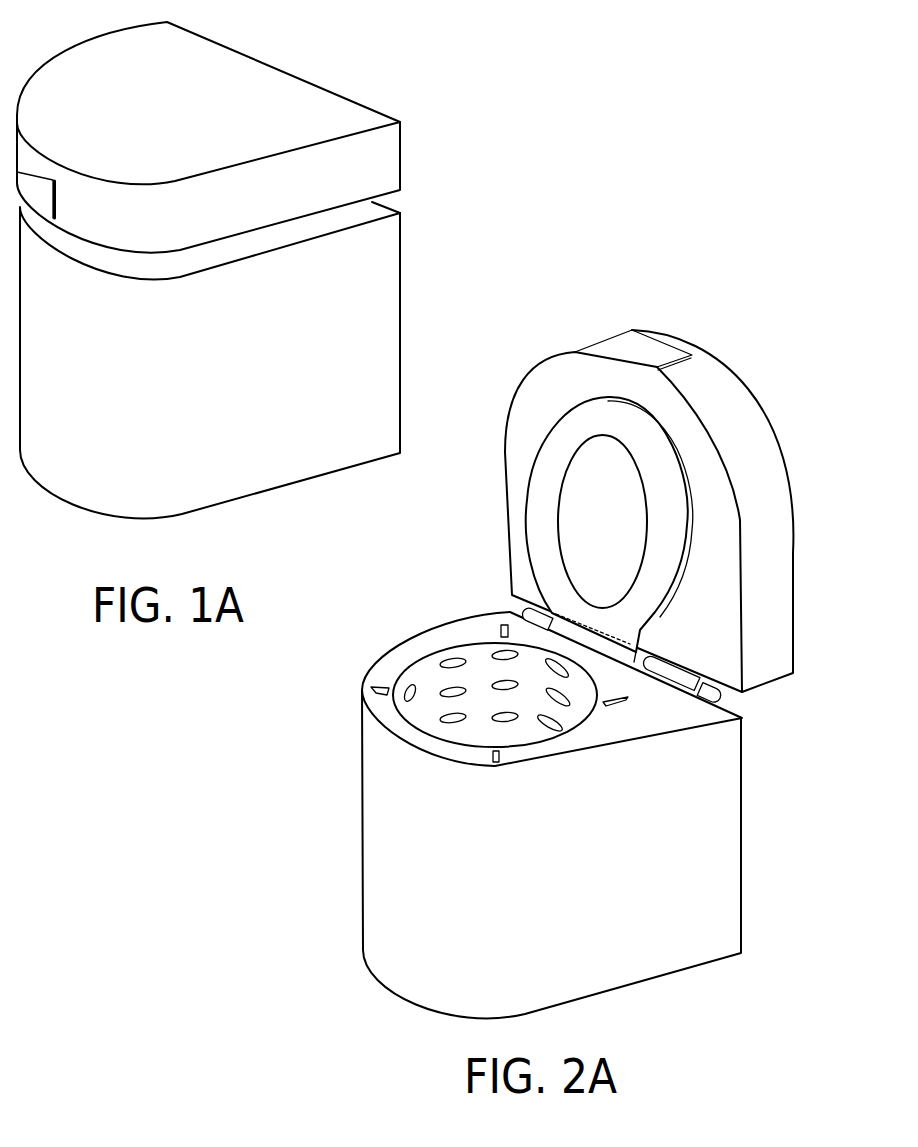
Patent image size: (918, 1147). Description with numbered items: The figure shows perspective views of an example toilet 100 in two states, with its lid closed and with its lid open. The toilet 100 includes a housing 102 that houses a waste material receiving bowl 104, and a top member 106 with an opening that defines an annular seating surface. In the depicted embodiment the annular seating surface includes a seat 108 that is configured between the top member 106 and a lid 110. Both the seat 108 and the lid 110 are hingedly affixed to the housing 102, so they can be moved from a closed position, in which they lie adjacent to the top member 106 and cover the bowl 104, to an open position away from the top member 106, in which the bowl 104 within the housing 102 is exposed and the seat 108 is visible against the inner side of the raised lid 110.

In FIG. 1A, the toilet 100 is at (237, 269).
In FIG. 2A, the toilet 100 is at (603, 674).
In FIG. 1A, the housing 102 is at (402, 323).
In FIG. 2A, the housing 102 is at (568, 804).
In FIG. 2A, the waste material receiving bowl 104 is at (483, 669).
In FIG. 2A, the top member 106 is at (402, 658).
In FIG. 2A, the seat 108 is at (648, 606).
In FIG. 1A, the lid 110 is at (403, 172).
In FIG. 2A, the lid 110 is at (678, 517).